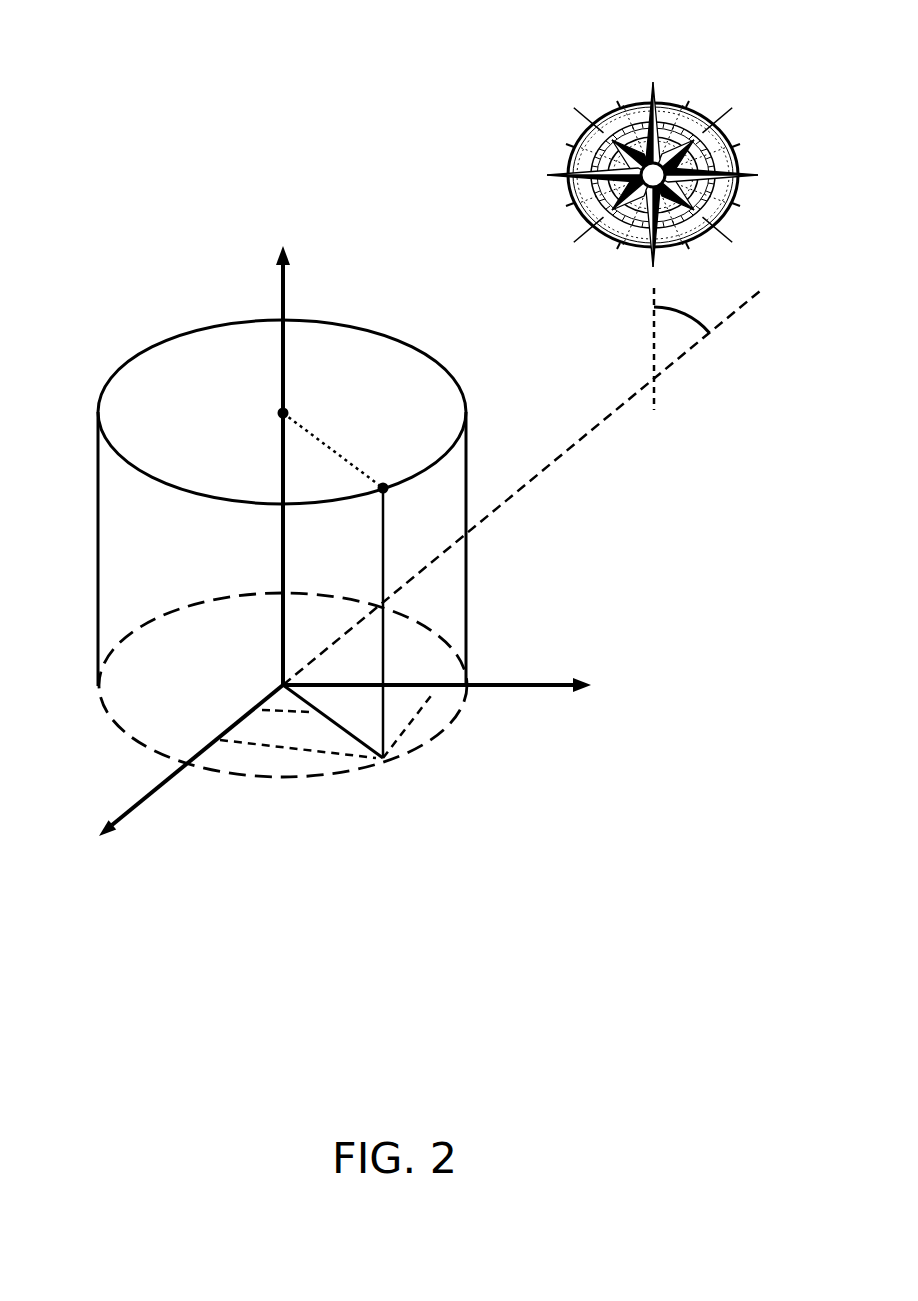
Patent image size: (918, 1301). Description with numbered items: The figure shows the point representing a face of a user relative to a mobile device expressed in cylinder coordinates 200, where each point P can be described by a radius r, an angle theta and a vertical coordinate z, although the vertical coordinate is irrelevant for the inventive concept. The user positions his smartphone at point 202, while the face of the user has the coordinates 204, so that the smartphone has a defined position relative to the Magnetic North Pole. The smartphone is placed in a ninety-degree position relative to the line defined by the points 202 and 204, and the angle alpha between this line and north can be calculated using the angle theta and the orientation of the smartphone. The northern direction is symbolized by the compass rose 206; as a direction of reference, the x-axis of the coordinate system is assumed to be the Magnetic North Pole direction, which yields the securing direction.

The cylinder coordinates 200 is at (155, 90).
The point of the smartphone position 202 is at (262, 412).
The coordinates of the face of the user 204 is at (388, 474).
The compass rose 206 is at (533, 141).